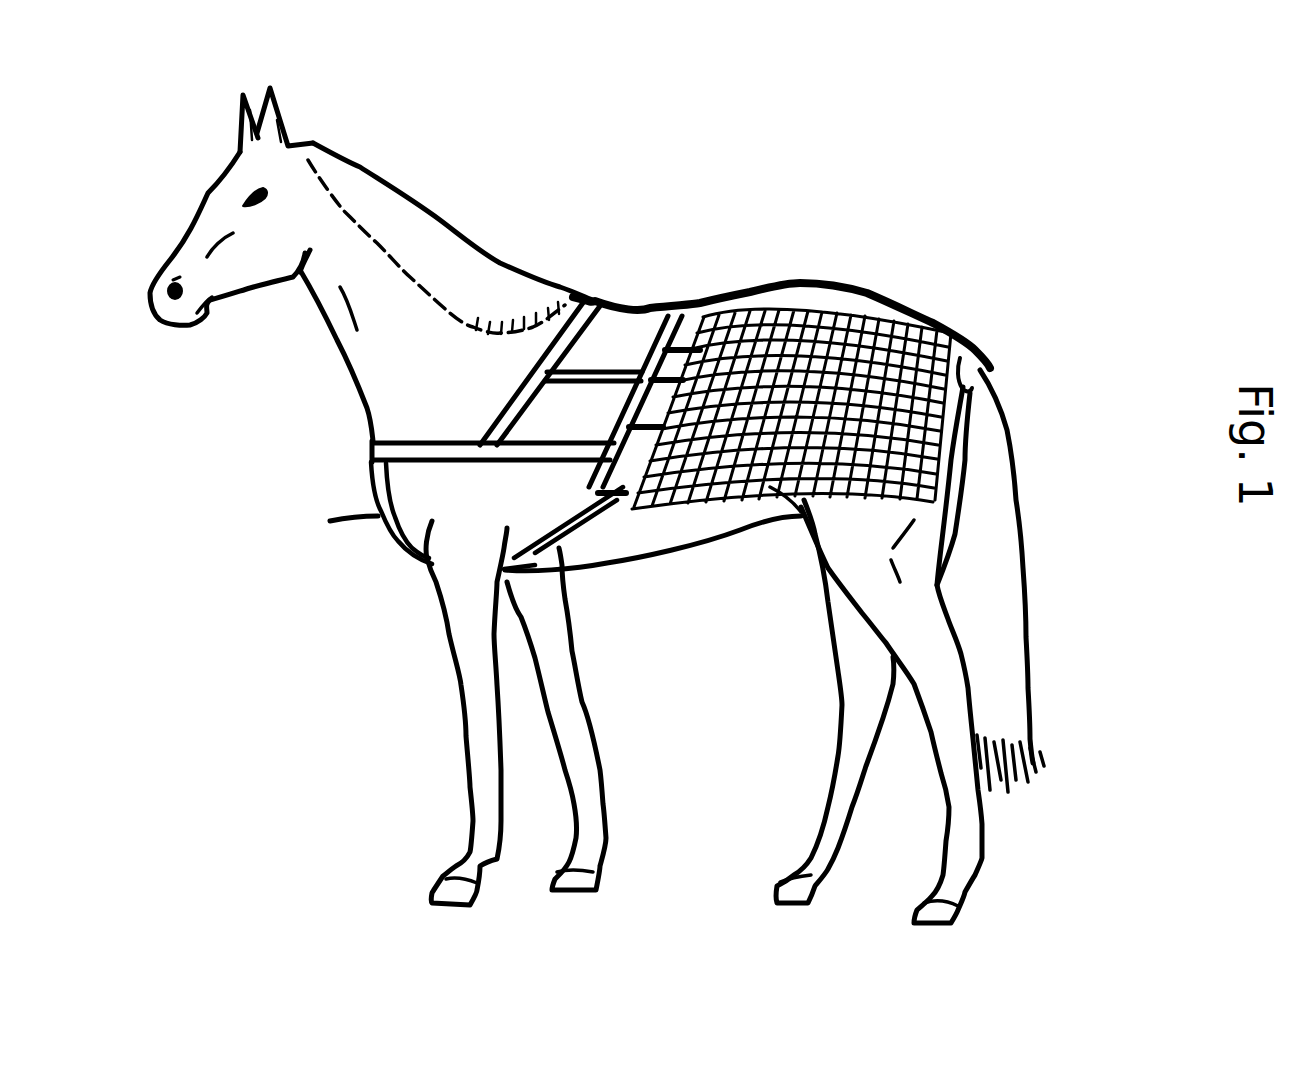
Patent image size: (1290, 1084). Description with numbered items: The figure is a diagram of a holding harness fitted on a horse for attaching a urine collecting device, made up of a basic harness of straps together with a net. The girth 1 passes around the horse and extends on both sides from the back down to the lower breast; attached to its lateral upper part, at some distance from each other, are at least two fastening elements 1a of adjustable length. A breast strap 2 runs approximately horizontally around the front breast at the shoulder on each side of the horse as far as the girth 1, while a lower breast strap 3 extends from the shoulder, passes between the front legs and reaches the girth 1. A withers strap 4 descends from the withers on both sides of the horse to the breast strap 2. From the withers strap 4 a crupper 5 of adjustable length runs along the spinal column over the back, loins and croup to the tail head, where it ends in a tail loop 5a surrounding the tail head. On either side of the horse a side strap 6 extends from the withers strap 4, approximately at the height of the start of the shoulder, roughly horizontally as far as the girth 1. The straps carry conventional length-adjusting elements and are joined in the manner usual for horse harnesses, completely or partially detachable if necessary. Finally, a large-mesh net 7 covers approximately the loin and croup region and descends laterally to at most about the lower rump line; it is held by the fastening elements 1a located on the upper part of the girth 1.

The girth 1 is at (648, 318).
The fastening elements 1a is at (680, 352).
The breast strap 2 is at (435, 432).
The lower breast strap 3 is at (377, 513).
The withers strap 4 is at (505, 385).
The crupper 5 is at (840, 283).
The tail loop 5a is at (972, 340).
The side strap 6 is at (610, 368).
The net 7 is at (885, 395).